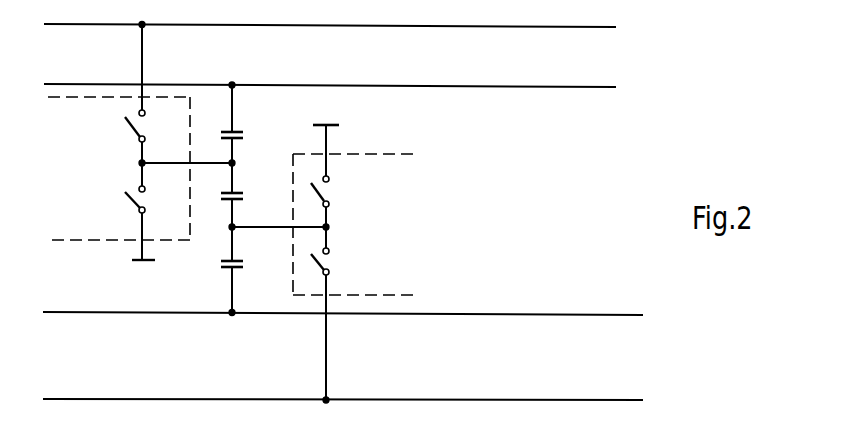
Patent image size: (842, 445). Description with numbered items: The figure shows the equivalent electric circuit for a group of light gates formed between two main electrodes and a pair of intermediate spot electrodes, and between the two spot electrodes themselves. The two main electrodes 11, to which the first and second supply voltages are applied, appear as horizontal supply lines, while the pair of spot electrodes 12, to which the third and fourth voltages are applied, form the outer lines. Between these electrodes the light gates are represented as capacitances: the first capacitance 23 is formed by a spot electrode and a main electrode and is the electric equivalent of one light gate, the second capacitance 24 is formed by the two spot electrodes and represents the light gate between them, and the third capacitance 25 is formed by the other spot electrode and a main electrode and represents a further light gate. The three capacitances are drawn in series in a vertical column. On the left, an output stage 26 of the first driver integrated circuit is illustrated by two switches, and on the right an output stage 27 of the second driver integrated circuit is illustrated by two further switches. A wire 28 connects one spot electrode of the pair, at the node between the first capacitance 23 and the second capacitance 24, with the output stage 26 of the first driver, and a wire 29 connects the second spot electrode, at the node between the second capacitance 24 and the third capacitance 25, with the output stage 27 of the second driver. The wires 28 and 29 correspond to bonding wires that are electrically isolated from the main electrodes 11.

The main electrodes 11 is at (526, 88).
The spot electrodes 12 is at (466, 27).
The capacitance C1 23 is at (258, 108).
The capacitance C2 24 is at (254, 173).
The capacitance C3 25 is at (249, 265).
The output stage of driver IC IC1 26 is at (56, 243).
The output stage of driver IC IC2 27 is at (363, 152).
The wire 28 is at (167, 157).
The wire 29 is at (308, 223).